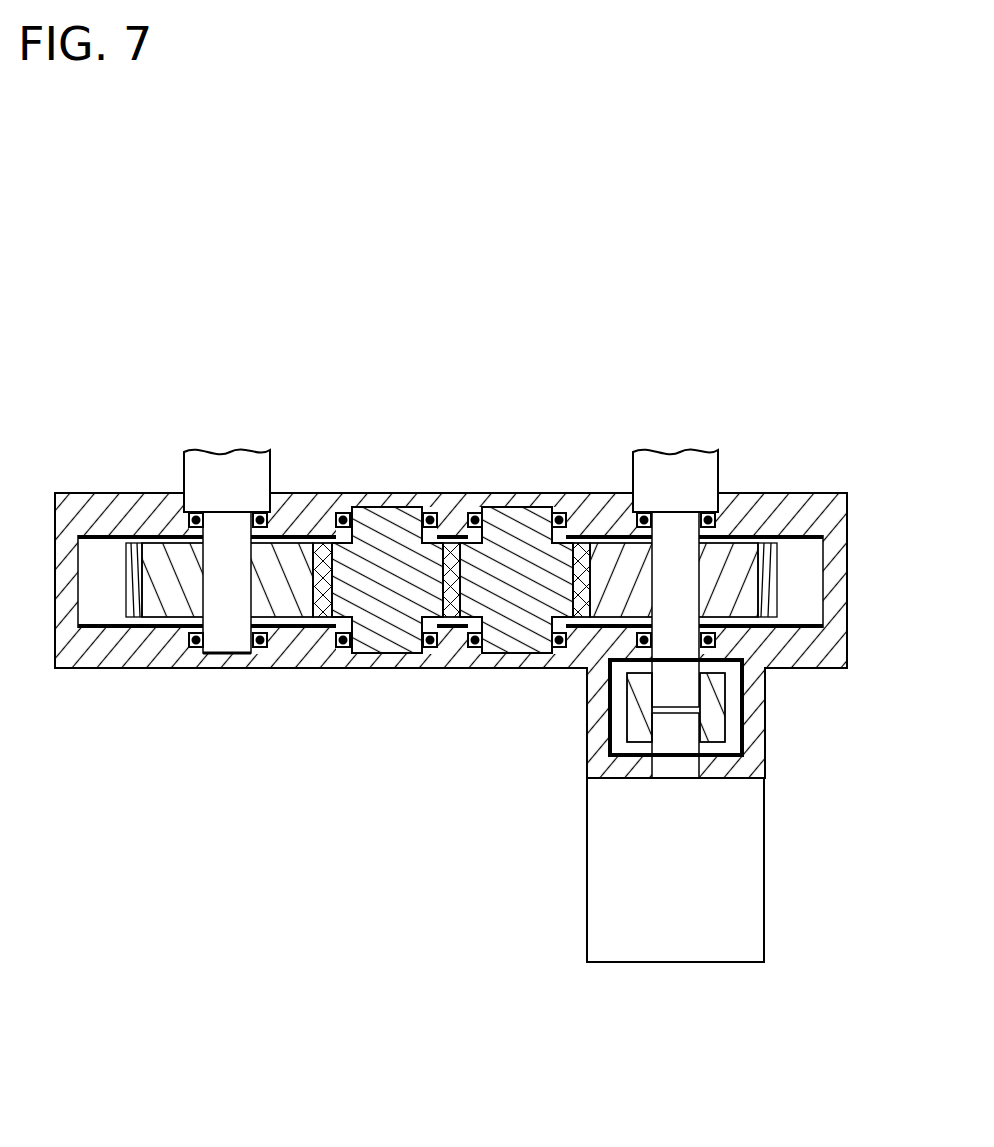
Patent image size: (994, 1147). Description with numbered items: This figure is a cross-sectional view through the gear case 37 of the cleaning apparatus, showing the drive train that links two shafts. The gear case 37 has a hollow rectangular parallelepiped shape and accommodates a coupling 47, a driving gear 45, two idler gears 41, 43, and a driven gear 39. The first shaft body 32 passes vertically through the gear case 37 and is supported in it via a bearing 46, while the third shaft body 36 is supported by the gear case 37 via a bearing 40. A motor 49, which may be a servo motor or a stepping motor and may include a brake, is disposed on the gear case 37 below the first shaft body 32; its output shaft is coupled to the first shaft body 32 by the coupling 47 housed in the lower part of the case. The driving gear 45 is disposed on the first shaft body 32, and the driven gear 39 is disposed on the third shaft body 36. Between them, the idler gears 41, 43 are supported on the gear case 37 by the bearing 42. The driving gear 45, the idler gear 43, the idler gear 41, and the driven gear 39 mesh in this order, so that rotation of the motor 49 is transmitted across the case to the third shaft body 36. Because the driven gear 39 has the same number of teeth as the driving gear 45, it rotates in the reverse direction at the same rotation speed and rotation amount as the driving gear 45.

The first shaft body 32 is at (719, 467).
The third shaft body 36 is at (271, 464).
The gear case 37 is at (848, 503).
The driven gear 39 is at (152, 618).
The bearing 40 is at (190, 514).
The idler gear 41 is at (377, 655).
The bearing 42 is at (430, 507).
The idler gear 43 is at (522, 507).
The driving gear 45 is at (780, 563).
The bearing 46 is at (638, 516).
The coupling 47 is at (742, 703).
The motor 49 is at (765, 862).